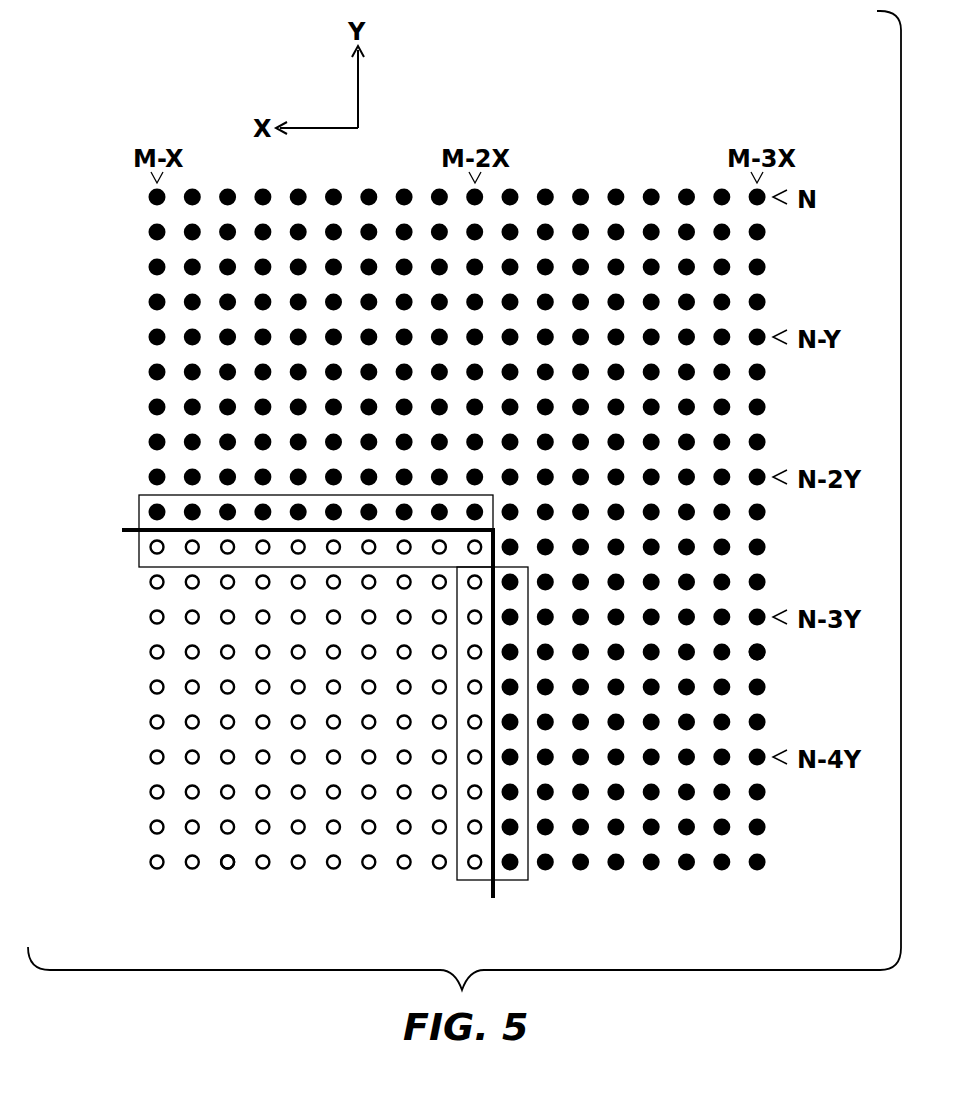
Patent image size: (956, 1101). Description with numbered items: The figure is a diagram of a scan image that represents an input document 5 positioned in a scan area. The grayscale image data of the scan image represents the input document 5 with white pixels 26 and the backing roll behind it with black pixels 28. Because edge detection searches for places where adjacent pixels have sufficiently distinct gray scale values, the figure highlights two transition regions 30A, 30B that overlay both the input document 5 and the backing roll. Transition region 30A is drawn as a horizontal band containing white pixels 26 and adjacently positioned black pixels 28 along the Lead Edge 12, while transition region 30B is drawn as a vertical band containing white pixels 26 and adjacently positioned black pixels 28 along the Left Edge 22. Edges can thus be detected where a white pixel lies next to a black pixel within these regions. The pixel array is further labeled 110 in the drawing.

The input document 5 is at (177, 710).
The Lead Edge 12 is at (128, 528).
The Left Edge 22 is at (493, 886).
The white pixels 26 is at (232, 868).
The black pixels 28 is at (762, 660).
The transition region 30A is at (172, 555).
The transition region 30B is at (468, 847).
The pixel array 110 is at (471, 545).